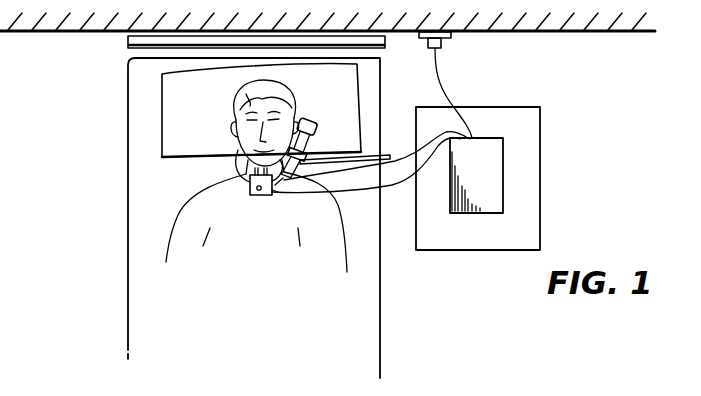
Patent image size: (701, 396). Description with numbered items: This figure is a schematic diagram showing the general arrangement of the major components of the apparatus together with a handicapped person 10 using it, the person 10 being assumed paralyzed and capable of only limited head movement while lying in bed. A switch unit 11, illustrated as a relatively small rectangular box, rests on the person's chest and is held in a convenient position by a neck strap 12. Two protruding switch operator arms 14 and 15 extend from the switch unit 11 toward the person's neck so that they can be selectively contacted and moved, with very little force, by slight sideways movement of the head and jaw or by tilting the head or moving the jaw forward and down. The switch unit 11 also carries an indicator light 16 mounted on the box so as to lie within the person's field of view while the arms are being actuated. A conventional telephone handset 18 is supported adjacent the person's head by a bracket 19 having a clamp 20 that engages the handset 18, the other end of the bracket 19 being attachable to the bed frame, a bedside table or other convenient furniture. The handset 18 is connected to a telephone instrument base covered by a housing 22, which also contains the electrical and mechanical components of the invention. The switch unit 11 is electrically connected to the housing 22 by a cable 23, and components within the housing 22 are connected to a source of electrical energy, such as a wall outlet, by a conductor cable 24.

The person 10 is at (163, 212).
The switch unit 11 is at (252, 205).
The neck strap 12 is at (236, 152).
The switch operator arm 14 is at (244, 150).
The switch operator arm 15 is at (277, 192).
The indicator light 16 is at (248, 199).
The telephone handset 18 is at (322, 105).
The bracket 19 is at (405, 136).
The clamp 20 is at (313, 156).
The housing 22 is at (504, 183).
The cable 23 is at (366, 186).
The conductor cable 24 is at (441, 88).